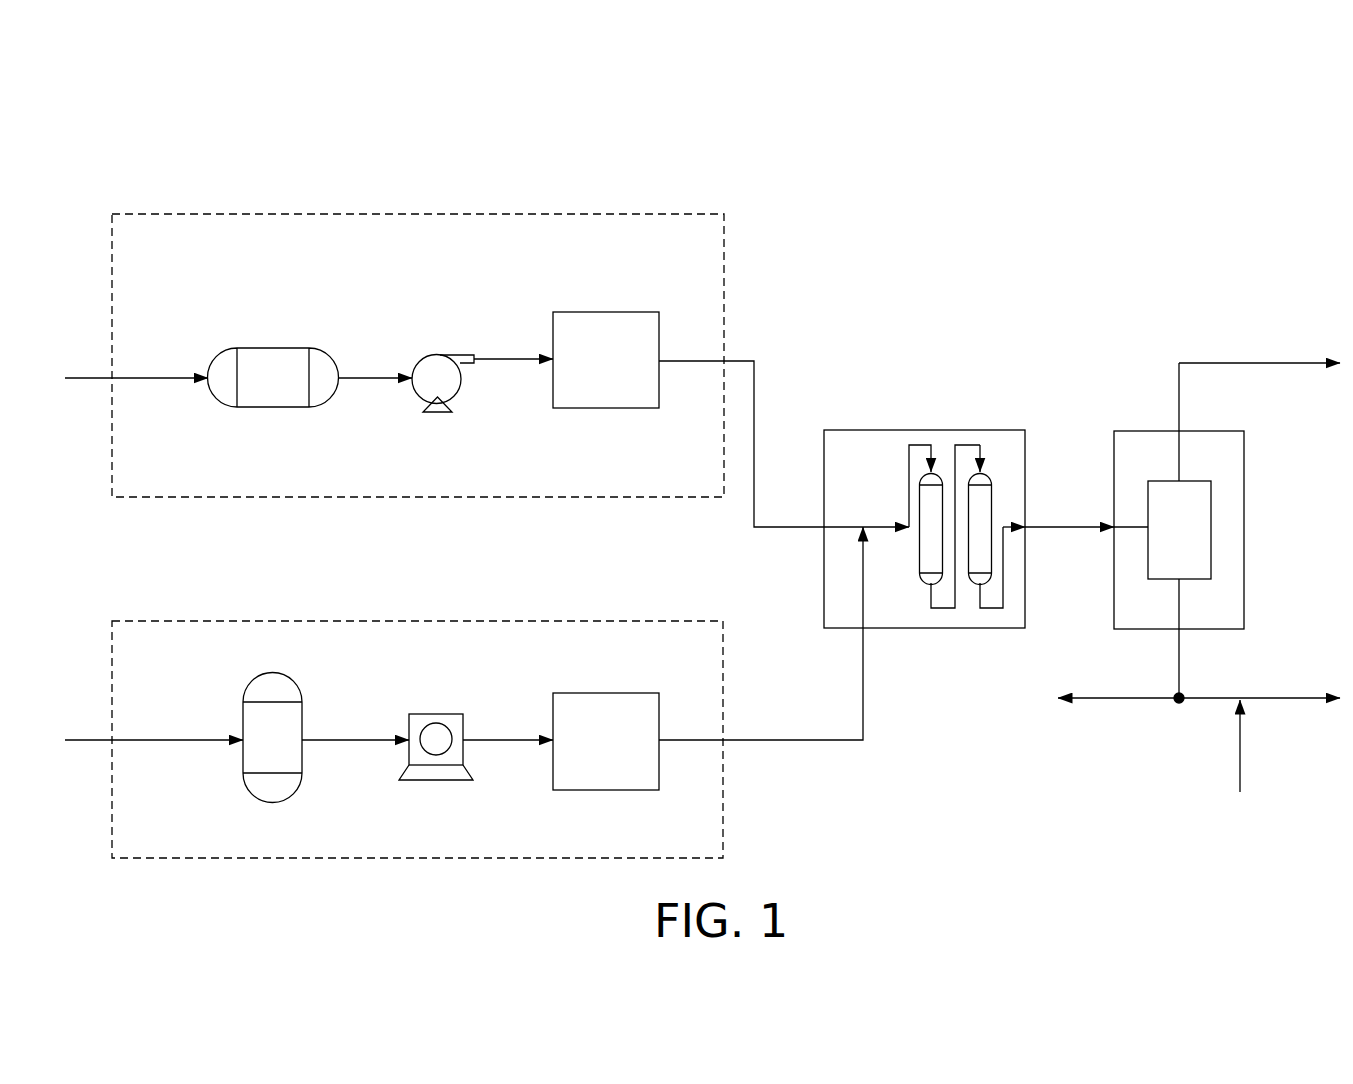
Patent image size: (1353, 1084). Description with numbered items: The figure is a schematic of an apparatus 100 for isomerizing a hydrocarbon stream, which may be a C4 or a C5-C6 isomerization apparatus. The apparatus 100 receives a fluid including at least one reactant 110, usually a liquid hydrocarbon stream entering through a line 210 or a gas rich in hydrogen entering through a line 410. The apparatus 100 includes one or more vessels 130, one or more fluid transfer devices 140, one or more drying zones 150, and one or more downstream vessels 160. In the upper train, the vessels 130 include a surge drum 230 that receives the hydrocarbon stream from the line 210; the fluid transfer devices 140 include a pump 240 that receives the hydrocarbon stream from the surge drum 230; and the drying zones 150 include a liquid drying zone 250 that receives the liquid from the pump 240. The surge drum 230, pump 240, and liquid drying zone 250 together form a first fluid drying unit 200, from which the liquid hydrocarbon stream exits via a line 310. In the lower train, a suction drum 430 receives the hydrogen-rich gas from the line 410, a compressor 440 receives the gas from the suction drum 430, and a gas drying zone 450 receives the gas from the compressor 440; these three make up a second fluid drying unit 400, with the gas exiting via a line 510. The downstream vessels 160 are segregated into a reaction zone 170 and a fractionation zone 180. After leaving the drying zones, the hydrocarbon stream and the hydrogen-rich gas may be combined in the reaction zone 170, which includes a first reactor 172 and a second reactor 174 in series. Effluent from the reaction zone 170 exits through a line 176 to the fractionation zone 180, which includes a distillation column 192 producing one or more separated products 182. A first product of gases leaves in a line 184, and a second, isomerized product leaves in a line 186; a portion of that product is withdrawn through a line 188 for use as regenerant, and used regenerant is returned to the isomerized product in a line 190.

The apparatus 100 is at (1280, 180).
The reactant 110 is at (144, 320).
The vessels 130 is at (275, 185).
The fluid transfer devices 140 is at (443, 185).
The drying zones 150 is at (610, 185).
The downstream vessels 160 is at (838, 404).
The reaction zone 170 is at (1012, 430).
The first reactor 172 is at (912, 488).
The second reactor 174 is at (993, 490).
The line 176 is at (1070, 530).
The fractionation zone 180 is at (1230, 431).
The separated products 182 is at (1299, 316).
The line 184 is at (1241, 362).
The line 186 is at (1212, 696).
The line 188 is at (1118, 696).
The line 190 is at (1238, 746).
The distillation column 192 is at (1212, 500).
The first fluid drying unit 200 is at (710, 214).
The line 210 is at (165, 375).
The surge drum 230 is at (296, 348).
The pump 240 is at (462, 383).
The liquid drying zone 250 is at (643, 312).
The line 310 is at (742, 361).
The second fluid drying unit 400 is at (710, 621).
The line 410 is at (154, 737).
The suction drum 430 is at (303, 714).
The compressor 440 is at (448, 714).
The gas drying zone 450 is at (643, 693).
The line 510 is at (773, 738).